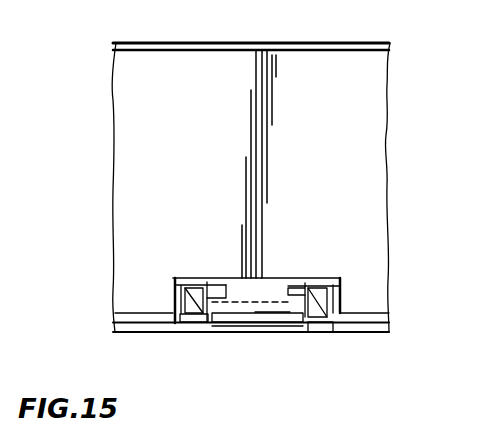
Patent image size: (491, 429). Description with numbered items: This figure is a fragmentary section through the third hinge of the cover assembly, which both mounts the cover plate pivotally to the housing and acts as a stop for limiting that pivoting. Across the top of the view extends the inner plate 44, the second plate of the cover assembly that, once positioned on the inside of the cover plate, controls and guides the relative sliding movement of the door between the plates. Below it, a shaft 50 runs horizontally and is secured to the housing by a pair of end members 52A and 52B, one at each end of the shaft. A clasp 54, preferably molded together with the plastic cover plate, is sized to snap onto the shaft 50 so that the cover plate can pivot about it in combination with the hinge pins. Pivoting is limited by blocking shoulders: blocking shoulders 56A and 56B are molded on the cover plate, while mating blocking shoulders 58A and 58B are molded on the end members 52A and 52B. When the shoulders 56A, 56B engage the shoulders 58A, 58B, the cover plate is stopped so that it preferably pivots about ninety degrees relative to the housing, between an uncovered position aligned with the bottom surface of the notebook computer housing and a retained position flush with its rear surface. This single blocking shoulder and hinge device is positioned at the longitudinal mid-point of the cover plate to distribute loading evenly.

The inner plate 44 is at (370, 108).
The shaft 50 is at (233, 318).
The end member 52A is at (317, 293).
The end member 52B is at (182, 287).
The clasp 54 is at (258, 328).
The blocking shoulder 56A is at (313, 330).
The blocking shoulder 56B is at (200, 323).
The blocking shoulder 58A is at (343, 313).
The blocking shoulder 58B is at (220, 287).